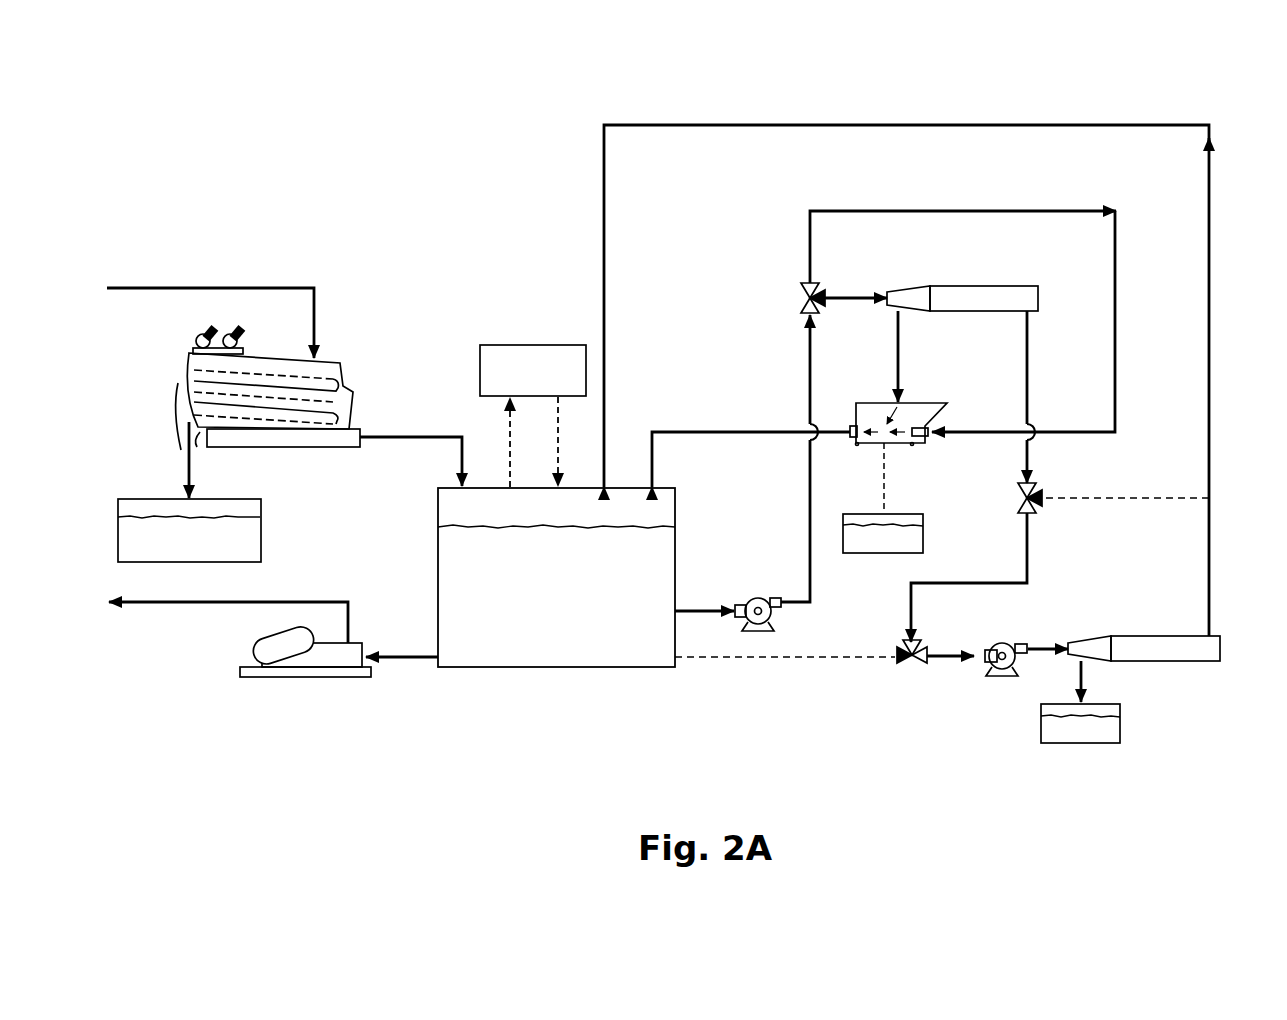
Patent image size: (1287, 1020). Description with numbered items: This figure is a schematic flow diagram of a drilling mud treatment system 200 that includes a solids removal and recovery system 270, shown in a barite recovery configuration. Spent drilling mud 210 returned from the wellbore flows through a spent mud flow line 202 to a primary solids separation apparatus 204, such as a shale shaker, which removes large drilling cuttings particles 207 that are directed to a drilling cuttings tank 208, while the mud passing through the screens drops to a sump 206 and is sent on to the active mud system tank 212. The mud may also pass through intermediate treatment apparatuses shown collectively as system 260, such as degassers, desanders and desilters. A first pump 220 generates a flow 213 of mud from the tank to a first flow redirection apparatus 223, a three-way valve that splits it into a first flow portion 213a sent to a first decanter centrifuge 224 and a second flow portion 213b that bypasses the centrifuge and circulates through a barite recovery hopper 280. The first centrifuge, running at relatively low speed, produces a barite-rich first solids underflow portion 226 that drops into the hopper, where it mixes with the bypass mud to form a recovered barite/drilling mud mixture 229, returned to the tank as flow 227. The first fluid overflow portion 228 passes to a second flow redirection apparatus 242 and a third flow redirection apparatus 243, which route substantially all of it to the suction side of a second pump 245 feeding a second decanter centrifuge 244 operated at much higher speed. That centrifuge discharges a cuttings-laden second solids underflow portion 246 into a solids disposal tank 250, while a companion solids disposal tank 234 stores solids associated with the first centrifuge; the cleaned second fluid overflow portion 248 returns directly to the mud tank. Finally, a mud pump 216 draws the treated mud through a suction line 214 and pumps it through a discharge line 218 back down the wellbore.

The drilling mud treatment system 200 is at (320, 124).
The solids removal and recovery system 270 is at (918, 92).
The spent mud flow line 202 is at (190, 288).
The primary solids separation apparatus 204 is at (327, 360).
The sump 206 is at (287, 450).
The drilling cuttings particles 207 is at (185, 472).
The drilling cuttings tank 208 is at (262, 533).
The drilling mud 210 is at (556, 577).
The active mud system tank 212 is at (517, 668).
The flow of drilling mud 213 is at (808, 483).
The first flow portion 213a is at (847, 290).
The second flow portion 213b is at (877, 211).
The suction line 214 is at (407, 658).
The mud pump 216 is at (285, 647).
The discharge line 218 is at (162, 602).
The first pump 220 is at (757, 598).
The first flow redirection apparatus 223 is at (800, 294).
The first decanter centrifuge 224 is at (1003, 285).
The first solids underflow portion 226 is at (895, 323).
The flow of recovered barite/mud mixture 227 is at (710, 430).
The first fluid overflow portion 228 is at (1028, 378).
The recovered barite/drilling mud mixture 229 is at (895, 443).
The solids disposal tank 234 is at (872, 555).
The second flow redirection apparatus 242 is at (1022, 502).
The third flow redirection apparatus 243 is at (912, 667).
The second decanter centrifuge 244 is at (1203, 662).
The second pump 245 is at (1002, 642).
The second solids underflow portion 246 is at (1083, 670).
The second fluid overflow portion 248 is at (603, 207).
The solids disposal tank 250 is at (1072, 745).
The intermediate mud treatment system 260 is at (533, 416).
The barite recovery hopper 280 is at (930, 403).